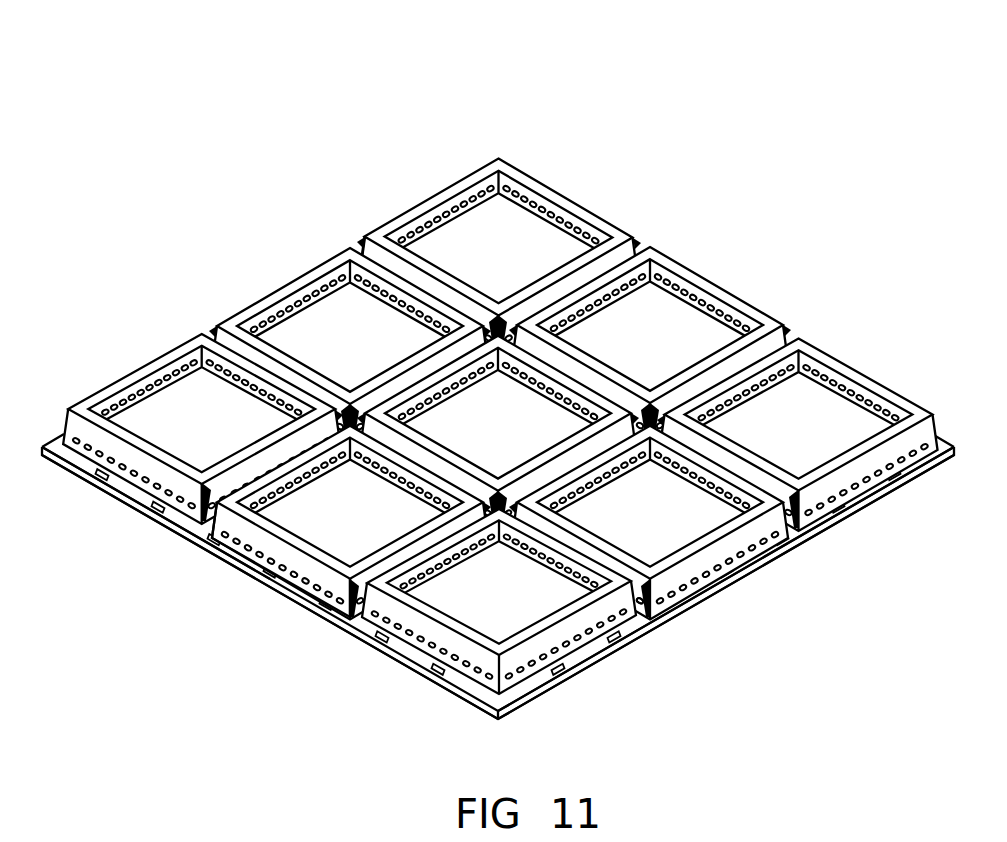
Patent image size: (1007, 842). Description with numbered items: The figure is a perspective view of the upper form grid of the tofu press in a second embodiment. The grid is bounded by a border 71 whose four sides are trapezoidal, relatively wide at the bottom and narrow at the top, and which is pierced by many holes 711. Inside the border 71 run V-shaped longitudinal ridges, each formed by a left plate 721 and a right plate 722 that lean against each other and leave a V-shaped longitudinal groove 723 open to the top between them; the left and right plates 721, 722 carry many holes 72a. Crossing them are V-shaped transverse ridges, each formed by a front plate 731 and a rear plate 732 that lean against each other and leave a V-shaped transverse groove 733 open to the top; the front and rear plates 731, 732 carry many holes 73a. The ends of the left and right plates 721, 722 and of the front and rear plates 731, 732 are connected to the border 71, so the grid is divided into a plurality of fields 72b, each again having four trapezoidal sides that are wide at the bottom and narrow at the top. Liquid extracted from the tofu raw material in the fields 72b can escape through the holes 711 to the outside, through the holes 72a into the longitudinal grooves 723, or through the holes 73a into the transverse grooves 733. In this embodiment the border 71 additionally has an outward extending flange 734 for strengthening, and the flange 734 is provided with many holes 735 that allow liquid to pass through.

The border 71 is at (812, 535).
The holes 711 is at (765, 540).
The left plate 721 is at (216, 515).
The right plate 722 is at (288, 548).
The V-shaped longitudinal groove 723 is at (780, 342).
The front plate 731 is at (658, 617).
The rear plate 732 is at (703, 605).
The V-shaped transverse groove 733 is at (363, 247).
The outward extending flange 734 is at (158, 517).
The holes 735 is at (342, 632).
The holes 72a is at (308, 480).
The fields 72b is at (518, 388).
The holes 73a is at (692, 478).